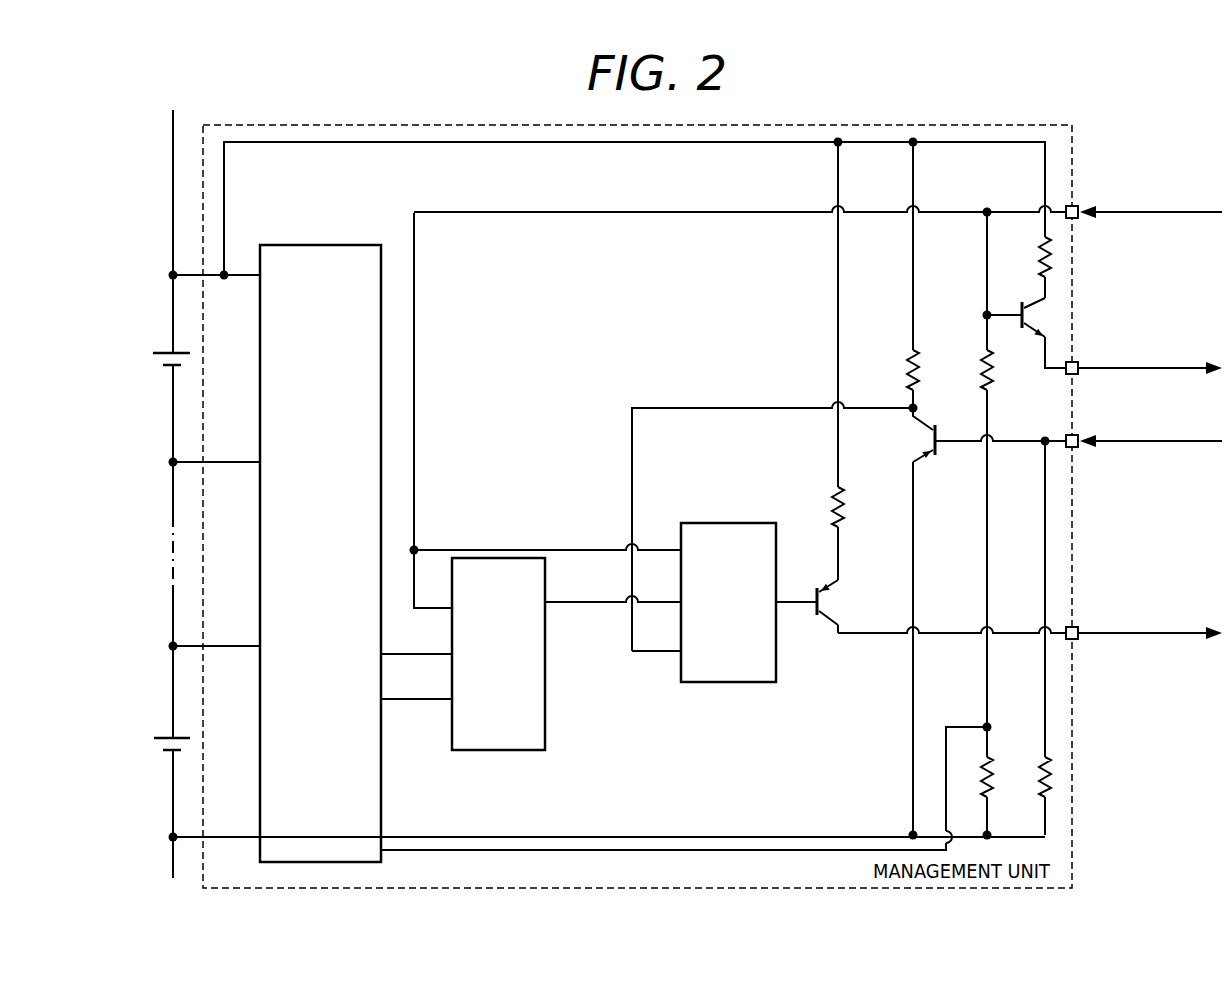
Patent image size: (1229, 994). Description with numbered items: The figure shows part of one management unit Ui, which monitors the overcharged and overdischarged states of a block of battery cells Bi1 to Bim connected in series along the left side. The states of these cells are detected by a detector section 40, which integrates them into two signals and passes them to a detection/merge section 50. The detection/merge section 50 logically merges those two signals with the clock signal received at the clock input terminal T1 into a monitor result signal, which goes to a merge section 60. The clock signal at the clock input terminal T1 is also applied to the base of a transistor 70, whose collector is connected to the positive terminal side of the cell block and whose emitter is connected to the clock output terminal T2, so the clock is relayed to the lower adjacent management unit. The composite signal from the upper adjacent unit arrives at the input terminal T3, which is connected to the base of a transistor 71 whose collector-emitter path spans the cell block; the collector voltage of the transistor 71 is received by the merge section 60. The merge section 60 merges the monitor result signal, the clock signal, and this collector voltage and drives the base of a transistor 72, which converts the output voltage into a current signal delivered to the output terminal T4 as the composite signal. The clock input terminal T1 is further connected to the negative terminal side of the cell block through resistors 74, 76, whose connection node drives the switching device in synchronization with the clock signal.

The detector section 40 is at (358, 244).
The detection/merge section 50 is at (546, 707).
The merge section 60 is at (741, 683).
The transistor 70 is at (1032, 300).
The transistor 71 is at (918, 432).
The transistor 72 is at (830, 620).
The resistor 74 is at (992, 762).
The resistor 76 is at (990, 390).
The clock input terminal T1 is at (1078, 207).
The clock output terminal T2 is at (1078, 363).
The input terminal T3 is at (1078, 435).
The output terminal T4 is at (1078, 627).
The battery cell Bi1 is at (160, 352).
The battery cell Bim is at (164, 737).
The management unit Ui is at (1073, 850).